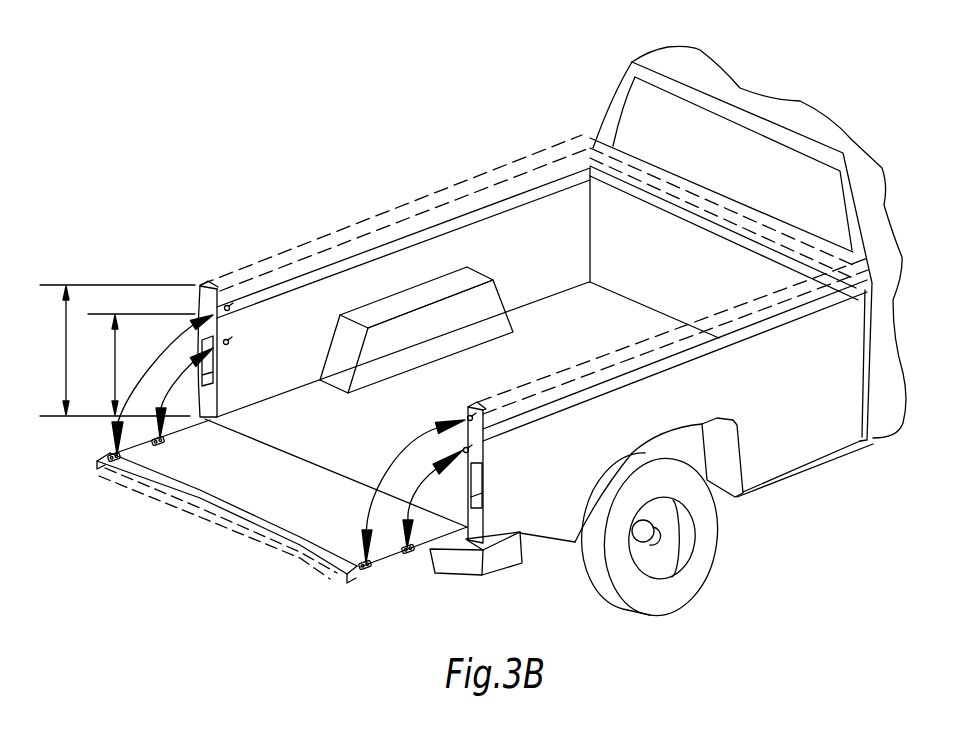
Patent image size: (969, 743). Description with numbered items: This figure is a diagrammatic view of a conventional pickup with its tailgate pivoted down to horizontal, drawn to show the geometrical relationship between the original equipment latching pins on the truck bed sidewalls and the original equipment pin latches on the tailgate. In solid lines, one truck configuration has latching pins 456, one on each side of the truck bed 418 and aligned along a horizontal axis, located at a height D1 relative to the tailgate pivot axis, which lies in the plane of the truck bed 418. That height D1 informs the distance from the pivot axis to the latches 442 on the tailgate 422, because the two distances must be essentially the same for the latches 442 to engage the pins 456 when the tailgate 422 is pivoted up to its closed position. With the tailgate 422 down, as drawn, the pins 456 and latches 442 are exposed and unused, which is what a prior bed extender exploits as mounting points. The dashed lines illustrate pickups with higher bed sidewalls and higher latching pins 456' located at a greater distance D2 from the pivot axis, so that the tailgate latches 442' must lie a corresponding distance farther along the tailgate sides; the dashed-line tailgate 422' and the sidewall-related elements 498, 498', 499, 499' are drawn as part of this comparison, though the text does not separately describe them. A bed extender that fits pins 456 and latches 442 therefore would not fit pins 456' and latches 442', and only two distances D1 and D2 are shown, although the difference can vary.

The truck bed 418 is at (595, 344).
The tailgate 422 is at (282, 501).
The tailgate in alternate position 422' is at (218, 523).
The tailgate latches 442 is at (321, 521).
The tailgate latches 442' is at (235, 524).
The latching pins 456 is at (348, 395).
The latching pins 456' is at (351, 362).
The left side rail 498 is at (403, 243).
The left side rail in raised position 498' is at (393, 213).
The right side rail 499 is at (675, 354).
The right side rail in raised position 499' is at (673, 336).
The height D1 is at (141, 364).
The distance D2 is at (117, 350).